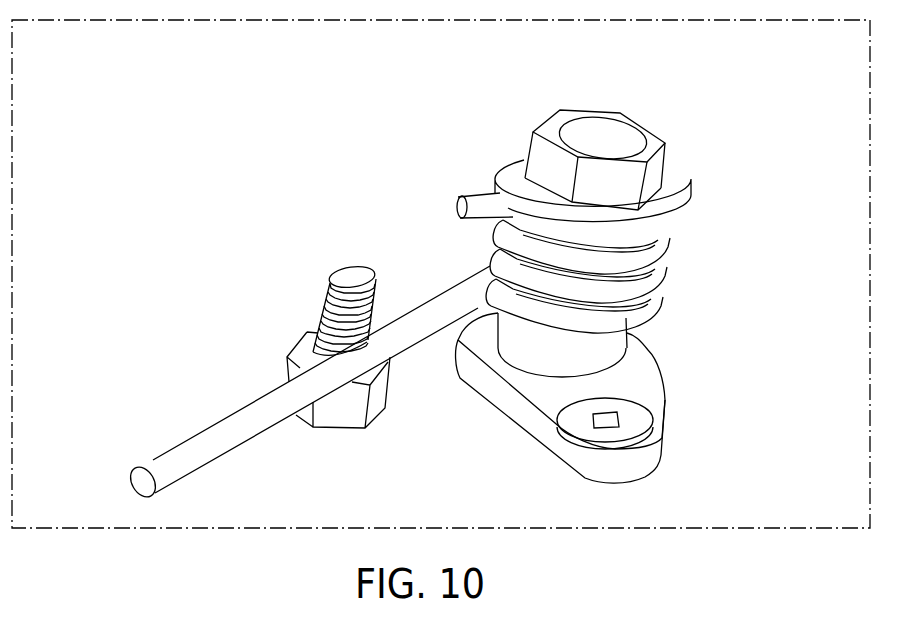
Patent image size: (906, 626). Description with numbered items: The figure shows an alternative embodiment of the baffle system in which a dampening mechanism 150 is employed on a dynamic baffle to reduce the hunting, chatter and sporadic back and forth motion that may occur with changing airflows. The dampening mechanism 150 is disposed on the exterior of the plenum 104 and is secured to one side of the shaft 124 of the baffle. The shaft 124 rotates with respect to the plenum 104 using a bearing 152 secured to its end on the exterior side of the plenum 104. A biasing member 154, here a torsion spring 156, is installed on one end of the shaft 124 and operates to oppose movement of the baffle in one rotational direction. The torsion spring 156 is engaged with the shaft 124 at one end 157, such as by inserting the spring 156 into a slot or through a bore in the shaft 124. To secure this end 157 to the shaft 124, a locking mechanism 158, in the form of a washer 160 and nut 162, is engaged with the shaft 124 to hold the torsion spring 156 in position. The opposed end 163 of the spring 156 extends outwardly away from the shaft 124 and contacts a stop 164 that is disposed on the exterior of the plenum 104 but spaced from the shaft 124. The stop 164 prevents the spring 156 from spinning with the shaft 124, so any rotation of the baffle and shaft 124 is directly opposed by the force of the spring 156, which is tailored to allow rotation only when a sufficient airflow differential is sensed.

The plenum 104 is at (763, 480).
The shaft 124 is at (612, 352).
The dampening mechanism 150 is at (130, 330).
The bearing 152 is at (645, 400).
The biasing member 154 is at (673, 250).
The torsion spring 156 is at (660, 287).
The end of the spring 157 is at (458, 115).
The locking mechanism 158 is at (675, 167).
The washer 160 is at (673, 197).
The nut 162 is at (660, 138).
The opposed end of the spring 163 is at (163, 465).
The stop 164 is at (317, 297).